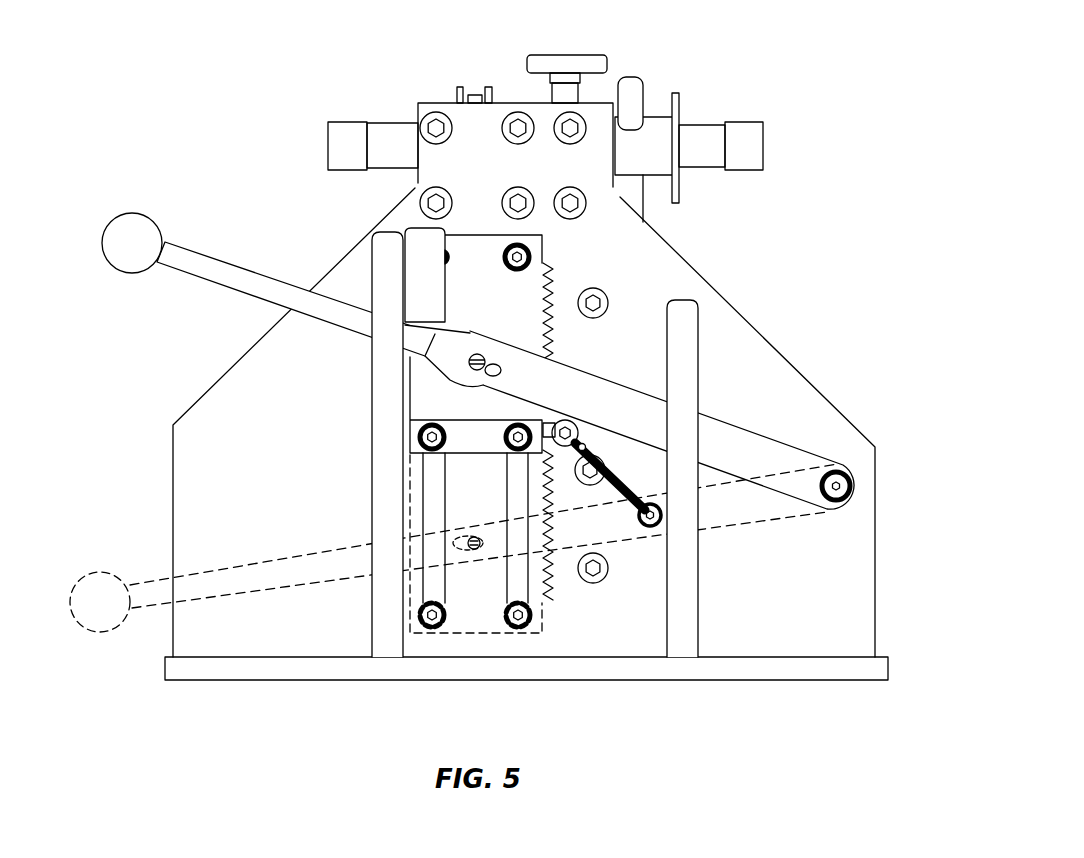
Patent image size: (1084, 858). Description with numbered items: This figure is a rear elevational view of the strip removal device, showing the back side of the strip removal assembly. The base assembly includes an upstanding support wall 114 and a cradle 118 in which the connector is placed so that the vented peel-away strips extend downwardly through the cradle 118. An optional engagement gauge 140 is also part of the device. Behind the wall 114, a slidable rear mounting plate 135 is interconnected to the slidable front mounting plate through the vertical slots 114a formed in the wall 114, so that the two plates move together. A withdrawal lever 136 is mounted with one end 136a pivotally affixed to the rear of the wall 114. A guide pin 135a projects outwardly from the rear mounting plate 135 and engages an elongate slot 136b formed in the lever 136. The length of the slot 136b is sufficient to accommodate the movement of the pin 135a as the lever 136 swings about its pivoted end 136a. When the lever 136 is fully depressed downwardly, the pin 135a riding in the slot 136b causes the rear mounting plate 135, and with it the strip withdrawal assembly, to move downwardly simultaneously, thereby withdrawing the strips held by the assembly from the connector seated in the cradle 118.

The upstanding support wall 114 is at (733, 363).
The vertical slots 114a is at (603, 708).
The cradle 118 is at (465, 157).
The slidable rear mounting plate 135 is at (497, 310).
The guide pin 135a is at (490, 360).
The withdrawal lever 136 is at (125, 232).
The lever end 136a is at (845, 477).
The elongate slot 136b is at (480, 372).
The engagement gauge 140 is at (628, 107).